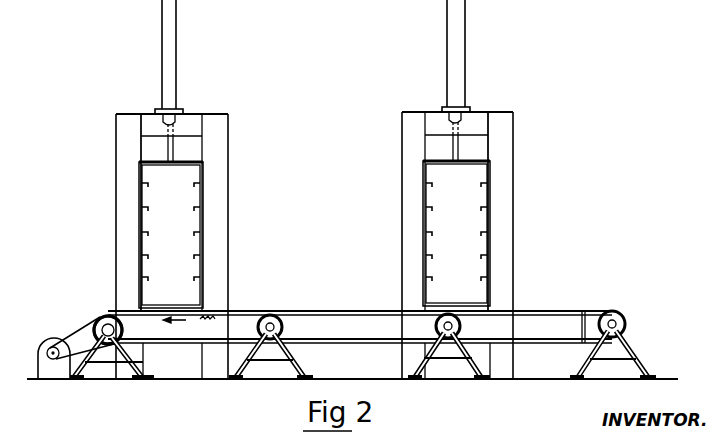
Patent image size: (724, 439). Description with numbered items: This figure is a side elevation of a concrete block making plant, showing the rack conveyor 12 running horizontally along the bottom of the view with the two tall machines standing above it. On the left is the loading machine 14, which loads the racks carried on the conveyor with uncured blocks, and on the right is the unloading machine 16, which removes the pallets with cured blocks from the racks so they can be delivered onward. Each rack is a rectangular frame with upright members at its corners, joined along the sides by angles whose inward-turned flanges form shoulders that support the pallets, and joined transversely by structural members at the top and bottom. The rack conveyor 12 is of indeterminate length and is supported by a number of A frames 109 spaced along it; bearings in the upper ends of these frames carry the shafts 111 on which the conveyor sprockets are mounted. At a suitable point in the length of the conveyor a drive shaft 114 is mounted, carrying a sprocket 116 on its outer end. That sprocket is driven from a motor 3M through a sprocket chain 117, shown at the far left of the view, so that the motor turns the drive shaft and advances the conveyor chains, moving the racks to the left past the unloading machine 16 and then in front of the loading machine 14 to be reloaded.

The rack conveyor 12 is at (542, 304).
The loading machine 14 is at (231, 133).
The unloading machine 16 is at (520, 135).
The A-frame stand 109 is at (88, 365).
The shaft 111 is at (273, 312).
The drive shaft 114 is at (108, 316).
The sprocket 116 is at (128, 332).
The sprocket chain 117 is at (84, 336).
The motor 3M is at (50, 340).